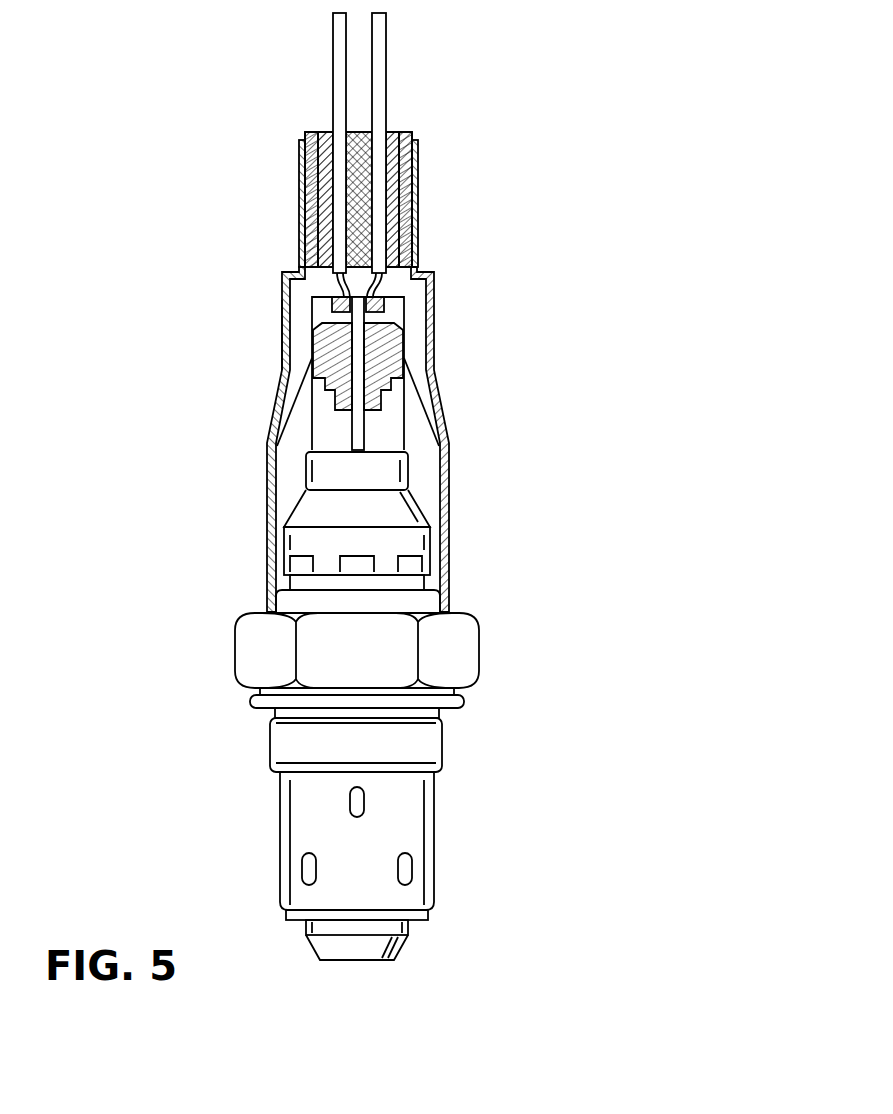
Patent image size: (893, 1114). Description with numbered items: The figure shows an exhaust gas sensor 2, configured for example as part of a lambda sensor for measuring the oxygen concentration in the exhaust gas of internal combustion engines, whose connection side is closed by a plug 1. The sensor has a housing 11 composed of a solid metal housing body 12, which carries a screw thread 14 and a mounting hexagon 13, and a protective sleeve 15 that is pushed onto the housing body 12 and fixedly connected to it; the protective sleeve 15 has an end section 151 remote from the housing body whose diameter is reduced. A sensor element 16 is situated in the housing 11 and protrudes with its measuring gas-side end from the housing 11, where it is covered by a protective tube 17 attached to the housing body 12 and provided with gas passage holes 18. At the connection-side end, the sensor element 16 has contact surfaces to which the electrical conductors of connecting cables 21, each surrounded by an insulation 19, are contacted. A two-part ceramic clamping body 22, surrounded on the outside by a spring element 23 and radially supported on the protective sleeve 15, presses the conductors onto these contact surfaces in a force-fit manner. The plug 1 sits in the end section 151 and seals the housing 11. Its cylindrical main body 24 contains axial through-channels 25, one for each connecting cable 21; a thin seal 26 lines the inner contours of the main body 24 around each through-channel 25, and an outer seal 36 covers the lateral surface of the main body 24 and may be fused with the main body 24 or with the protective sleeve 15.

The plug 1 is at (405, 127).
The exhaust gas sensor 2 is at (150, 272).
The housing 11 is at (438, 306).
The housing body 12 is at (250, 703).
The mounting hexagon 13 is at (455, 648).
The screw thread 14 is at (420, 742).
The protective sleeve 15 is at (282, 315).
The end section 151 is at (300, 163).
The sensor element 16 is at (362, 432).
The protective tube 17 is at (312, 822).
The gas passage holes 18 is at (405, 870).
The insulation 19 is at (333, 70).
The connecting cable 21 is at (338, 34).
The ceramic clamping body 22 is at (395, 350).
The spring element 23 is at (318, 348).
The main body 24 is at (418, 155).
The through-channels 25 is at (300, 244).
The seal 26 is at (300, 188).
The outer seal 36 is at (300, 218).